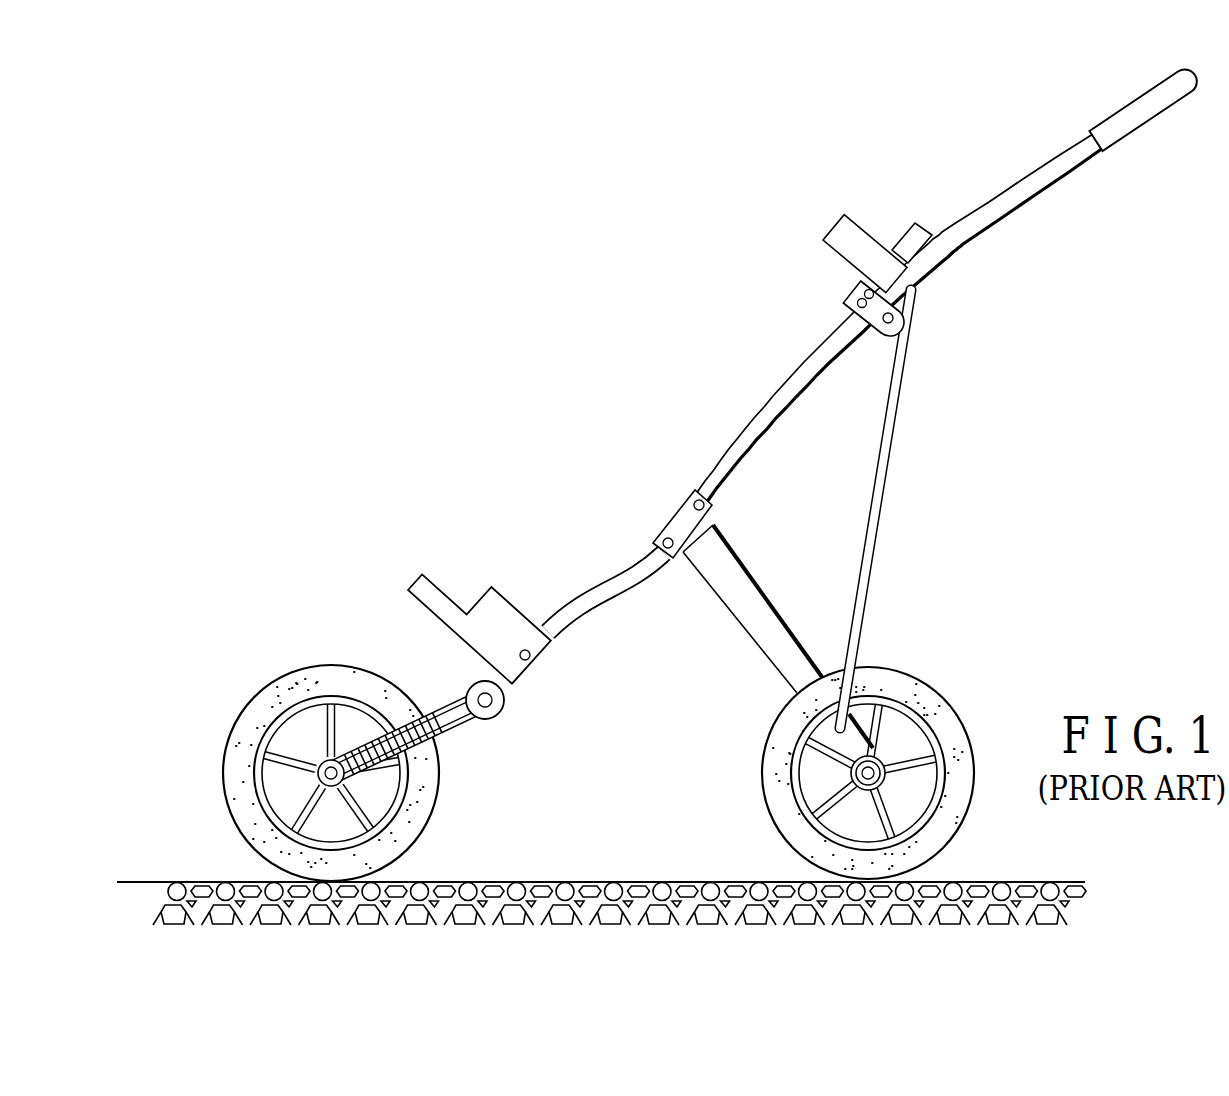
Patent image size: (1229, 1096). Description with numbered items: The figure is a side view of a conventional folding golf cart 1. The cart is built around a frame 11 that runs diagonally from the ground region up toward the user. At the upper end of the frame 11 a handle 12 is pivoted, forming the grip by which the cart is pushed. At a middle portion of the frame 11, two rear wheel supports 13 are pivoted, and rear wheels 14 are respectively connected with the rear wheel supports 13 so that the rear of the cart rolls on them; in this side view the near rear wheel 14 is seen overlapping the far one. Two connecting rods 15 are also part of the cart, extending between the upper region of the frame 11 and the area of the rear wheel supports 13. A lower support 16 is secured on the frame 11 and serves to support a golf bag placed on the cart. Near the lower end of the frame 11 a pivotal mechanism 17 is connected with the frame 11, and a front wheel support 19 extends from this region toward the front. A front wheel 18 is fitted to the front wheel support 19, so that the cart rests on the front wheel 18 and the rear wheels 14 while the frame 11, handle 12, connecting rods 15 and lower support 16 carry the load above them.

The folding golf cart 1 is at (743, 340).
The frame 11 is at (772, 408).
The handle 12 is at (1018, 197).
The rear wheel supports 13 is at (747, 613).
The rear wheels 14 is at (947, 717).
The connecting rods 15 is at (888, 448).
The lower support 16 is at (442, 600).
The pivotal mechanism 17 is at (503, 720).
The front wheel 18 is at (287, 677).
The front wheel support 19 is at (433, 692).